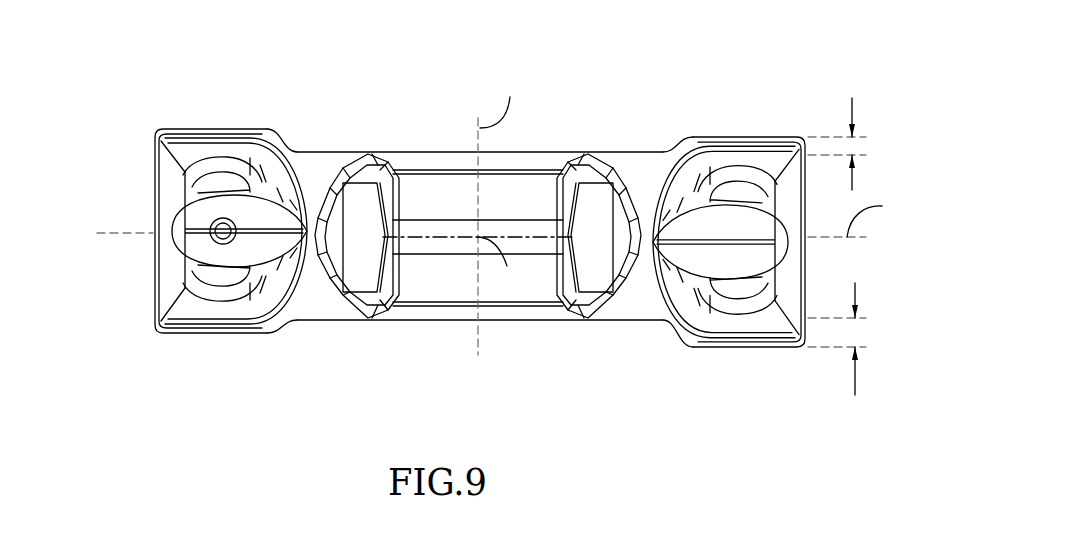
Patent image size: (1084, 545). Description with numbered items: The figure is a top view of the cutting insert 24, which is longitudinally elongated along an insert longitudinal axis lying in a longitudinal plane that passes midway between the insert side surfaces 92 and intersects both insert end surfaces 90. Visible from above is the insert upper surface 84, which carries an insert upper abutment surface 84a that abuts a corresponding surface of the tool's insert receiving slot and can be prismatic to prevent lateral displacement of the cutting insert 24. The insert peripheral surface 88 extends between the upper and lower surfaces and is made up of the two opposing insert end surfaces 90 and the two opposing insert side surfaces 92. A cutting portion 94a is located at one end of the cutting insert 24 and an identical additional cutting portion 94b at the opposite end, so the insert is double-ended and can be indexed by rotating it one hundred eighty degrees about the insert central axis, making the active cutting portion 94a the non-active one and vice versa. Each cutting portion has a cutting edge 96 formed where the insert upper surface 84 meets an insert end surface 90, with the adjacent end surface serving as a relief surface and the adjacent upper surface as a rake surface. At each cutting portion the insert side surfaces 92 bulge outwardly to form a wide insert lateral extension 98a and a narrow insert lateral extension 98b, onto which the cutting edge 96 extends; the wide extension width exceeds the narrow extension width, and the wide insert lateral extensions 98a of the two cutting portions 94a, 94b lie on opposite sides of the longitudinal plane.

The cutting insert 24 is at (166, 108).
The insert upper surface 84 is at (439, 290).
The insert upper abutment surface 84a is at (537, 283).
The insert peripheral surface 88 is at (620, 130).
The insert end surface 90 is at (140, 293).
The insert side surface 92 is at (410, 150).
The cutting portion 94a is at (776, 108).
The additional cutting portion 94b is at (226, 98).
The cutting edge 96 is at (151, 207).
The wide insert lateral extension 98a is at (199, 110).
The narrow insert lateral extension 98b is at (216, 353).